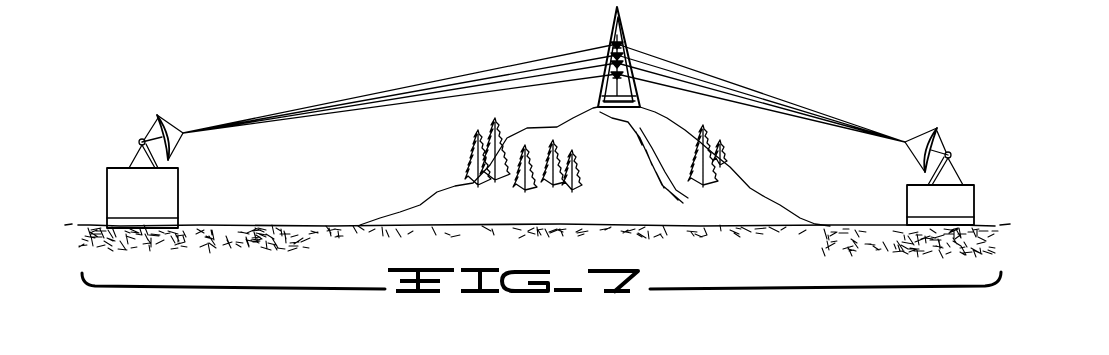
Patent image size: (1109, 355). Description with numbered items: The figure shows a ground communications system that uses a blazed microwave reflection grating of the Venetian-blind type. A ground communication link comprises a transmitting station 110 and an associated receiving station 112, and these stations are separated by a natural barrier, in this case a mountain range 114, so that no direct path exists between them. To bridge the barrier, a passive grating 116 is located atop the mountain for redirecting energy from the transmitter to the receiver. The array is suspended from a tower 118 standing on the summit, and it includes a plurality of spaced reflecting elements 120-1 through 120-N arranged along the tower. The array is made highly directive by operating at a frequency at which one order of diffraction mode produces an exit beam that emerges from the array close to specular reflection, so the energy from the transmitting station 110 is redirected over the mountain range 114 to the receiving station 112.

The transmitting station 110 is at (115, 187).
The receiving station 112 is at (963, 193).
The mountain range 114 is at (672, 138).
The passive grating 116 is at (600, 68).
The tower 118 is at (689, 57).
The first reflecting element 120-1 is at (625, 37).
The Nth reflecting element 120-N is at (628, 73).